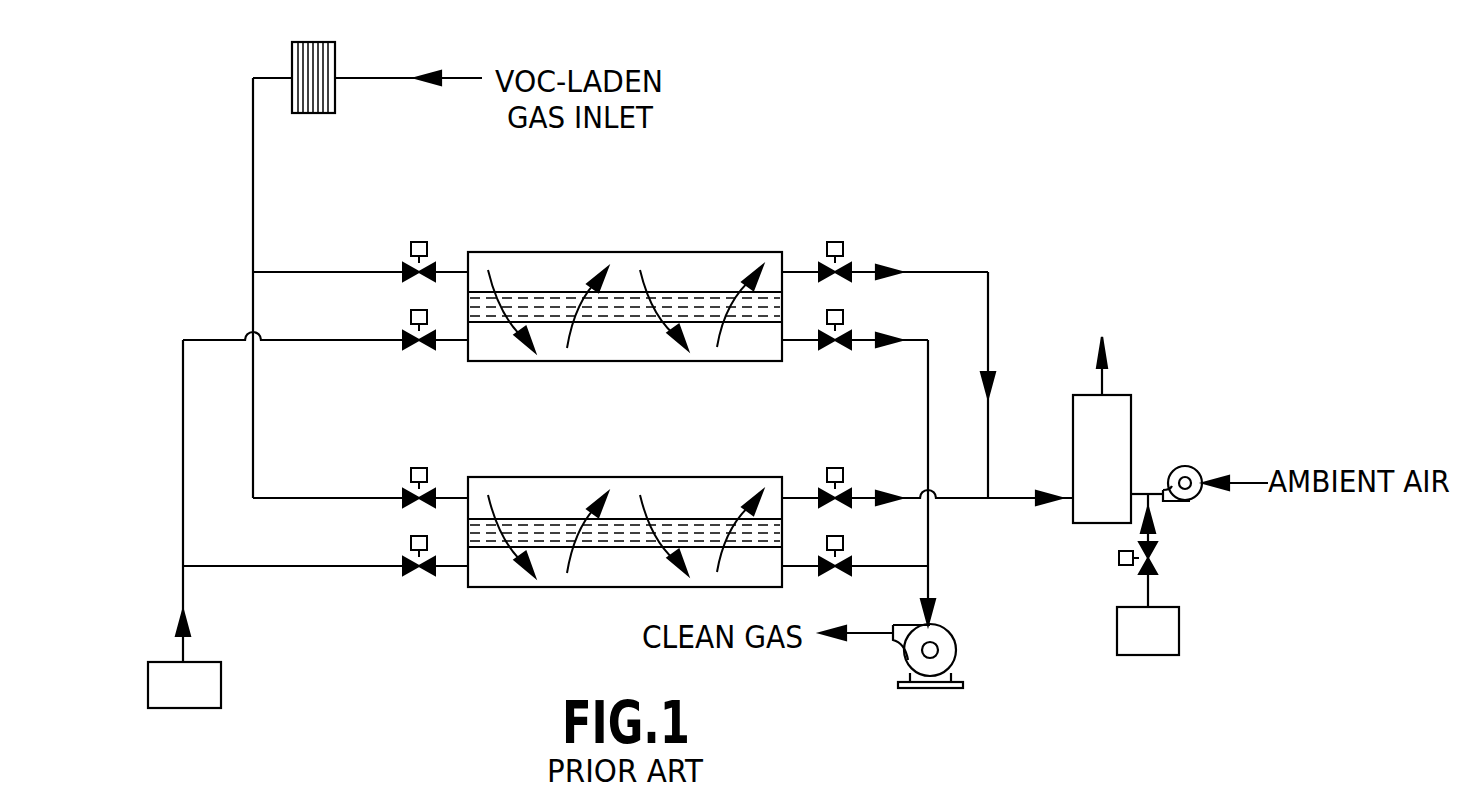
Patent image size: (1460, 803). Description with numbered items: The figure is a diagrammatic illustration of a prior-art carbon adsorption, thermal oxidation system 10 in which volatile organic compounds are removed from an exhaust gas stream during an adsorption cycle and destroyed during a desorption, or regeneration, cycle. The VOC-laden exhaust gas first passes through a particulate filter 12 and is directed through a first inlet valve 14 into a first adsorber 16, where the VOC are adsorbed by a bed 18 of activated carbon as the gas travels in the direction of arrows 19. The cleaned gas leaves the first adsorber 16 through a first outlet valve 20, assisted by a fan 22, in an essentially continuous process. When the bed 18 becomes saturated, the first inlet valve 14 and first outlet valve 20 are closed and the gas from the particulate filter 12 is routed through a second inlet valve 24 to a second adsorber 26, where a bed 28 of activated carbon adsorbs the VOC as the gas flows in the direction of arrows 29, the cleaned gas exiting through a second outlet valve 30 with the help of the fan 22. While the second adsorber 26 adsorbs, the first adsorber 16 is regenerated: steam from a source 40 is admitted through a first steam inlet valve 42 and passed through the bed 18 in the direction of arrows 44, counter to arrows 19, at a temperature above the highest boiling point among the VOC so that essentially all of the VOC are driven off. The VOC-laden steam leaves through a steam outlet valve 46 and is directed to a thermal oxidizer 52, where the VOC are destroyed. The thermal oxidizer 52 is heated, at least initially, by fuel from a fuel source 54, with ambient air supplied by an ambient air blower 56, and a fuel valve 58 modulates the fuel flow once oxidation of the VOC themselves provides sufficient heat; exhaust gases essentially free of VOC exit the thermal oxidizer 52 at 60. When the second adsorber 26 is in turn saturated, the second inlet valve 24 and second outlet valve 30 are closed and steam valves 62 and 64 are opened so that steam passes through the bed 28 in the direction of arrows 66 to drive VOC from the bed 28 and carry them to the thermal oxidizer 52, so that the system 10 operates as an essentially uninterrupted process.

The system 10 is at (708, 220).
The particulate filter 12 is at (323, 42).
The first inlet valve 14 is at (411, 247).
The first adsorber 16 is at (575, 252).
The bed 18 is at (643, 292).
The arrows 19 is at (497, 270).
The first outlet valve 20 is at (838, 352).
The fan 22 is at (942, 648).
The second inlet valve 24 is at (412, 470).
The second adsorber 26 is at (575, 477).
The bed 28 is at (643, 517).
The arrows 29 is at (497, 495).
The second outlet valve 30 is at (838, 578).
The source of steam 40 is at (222, 686).
The first steam inlet valve 42 is at (413, 352).
The arrows 44 is at (571, 340).
The steam outlet valve 46 is at (840, 247).
The thermal oxidizer 52 is at (1133, 416).
The fuel source 54 is at (1125, 656).
The ambient air blower 56 is at (1192, 468).
The fuel valve 58 is at (1156, 554).
The exhaust outlet 60 is at (1105, 393).
The steam valve 62 is at (413, 578).
The steam valve 64 is at (840, 471).
The arrows 66 is at (571, 565).